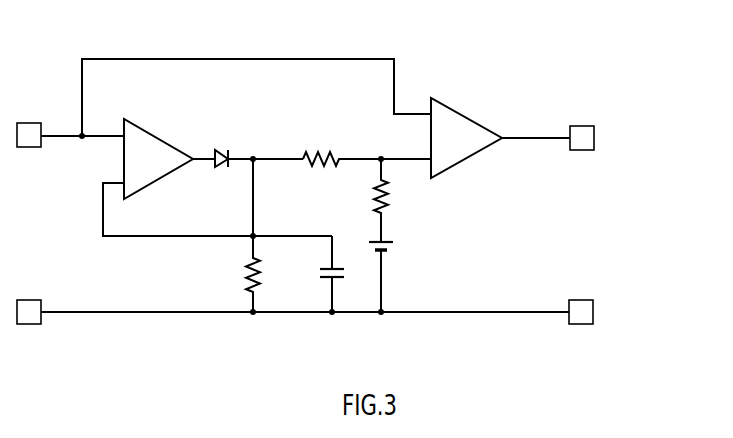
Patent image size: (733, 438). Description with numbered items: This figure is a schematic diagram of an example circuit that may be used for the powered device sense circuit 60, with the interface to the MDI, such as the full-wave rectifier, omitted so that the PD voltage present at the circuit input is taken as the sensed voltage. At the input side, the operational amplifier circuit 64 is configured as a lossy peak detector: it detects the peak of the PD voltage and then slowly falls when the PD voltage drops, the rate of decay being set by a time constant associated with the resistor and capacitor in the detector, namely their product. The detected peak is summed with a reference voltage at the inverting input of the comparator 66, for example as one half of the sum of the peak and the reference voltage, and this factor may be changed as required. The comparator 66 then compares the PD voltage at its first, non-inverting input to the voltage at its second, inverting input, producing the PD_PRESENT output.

The PD sense circuit 60 is at (369, 21).
The operational amplifier circuit 64 is at (158, 178).
The comparator 66 is at (458, 165).